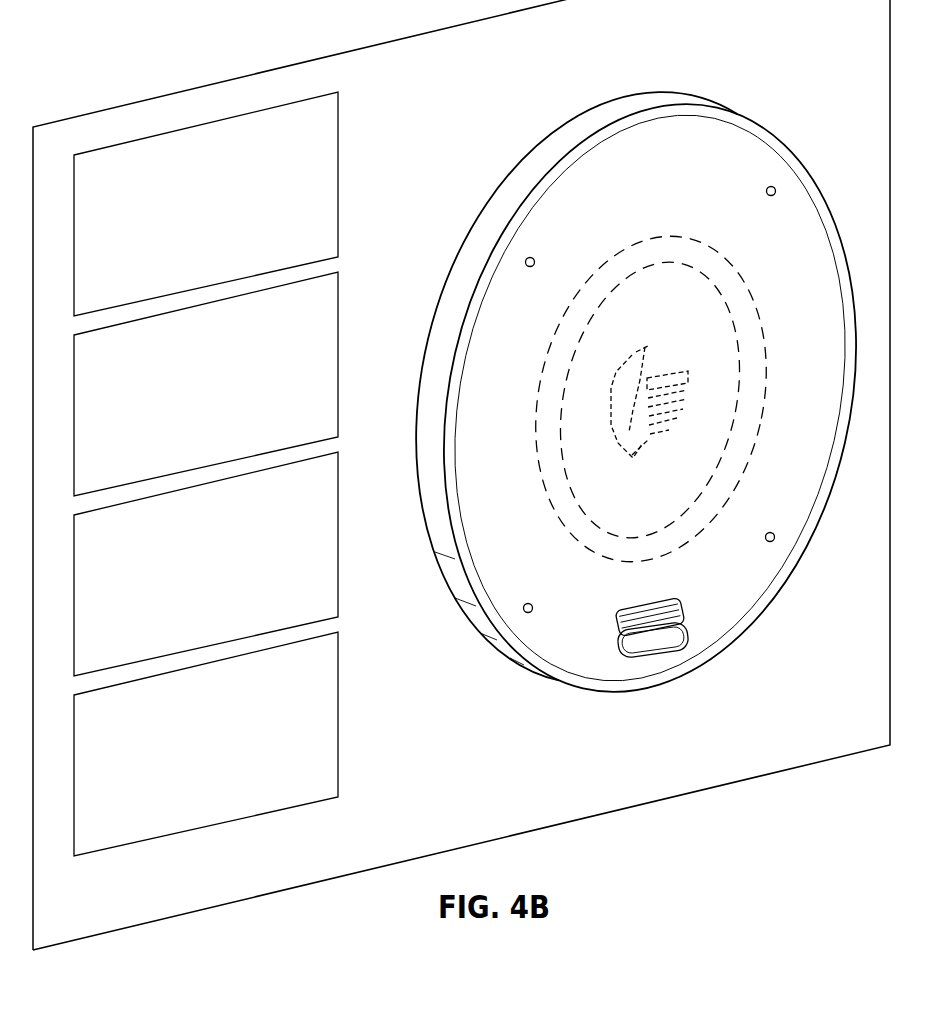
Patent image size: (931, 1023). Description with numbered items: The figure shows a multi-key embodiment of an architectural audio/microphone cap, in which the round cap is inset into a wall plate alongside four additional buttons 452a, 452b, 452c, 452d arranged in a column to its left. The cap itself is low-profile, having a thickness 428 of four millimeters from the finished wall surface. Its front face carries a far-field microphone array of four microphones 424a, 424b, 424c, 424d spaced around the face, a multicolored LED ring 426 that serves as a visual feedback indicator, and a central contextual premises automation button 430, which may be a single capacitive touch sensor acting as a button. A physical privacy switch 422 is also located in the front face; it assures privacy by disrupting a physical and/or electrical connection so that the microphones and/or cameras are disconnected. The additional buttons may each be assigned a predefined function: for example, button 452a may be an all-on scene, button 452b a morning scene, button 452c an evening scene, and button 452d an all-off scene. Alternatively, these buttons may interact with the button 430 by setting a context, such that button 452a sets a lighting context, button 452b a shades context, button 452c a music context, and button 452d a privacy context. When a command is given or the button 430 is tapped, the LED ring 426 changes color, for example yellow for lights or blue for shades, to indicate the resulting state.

The privacy switch 422 is at (643, 637).
The microphone 424a is at (771, 186).
The microphone 424b is at (767, 532).
The microphone 424c is at (530, 603).
The microphone 424d is at (531, 257).
The multicolored LED ring 426 is at (695, 248).
The thickness 428 is at (652, 100).
The contextual premises automation button 430 is at (664, 357).
The additional button 452a is at (338, 175).
The additional button 452b is at (338, 355).
The additional button 452c is at (338, 535).
The additional button 452d is at (338, 715).